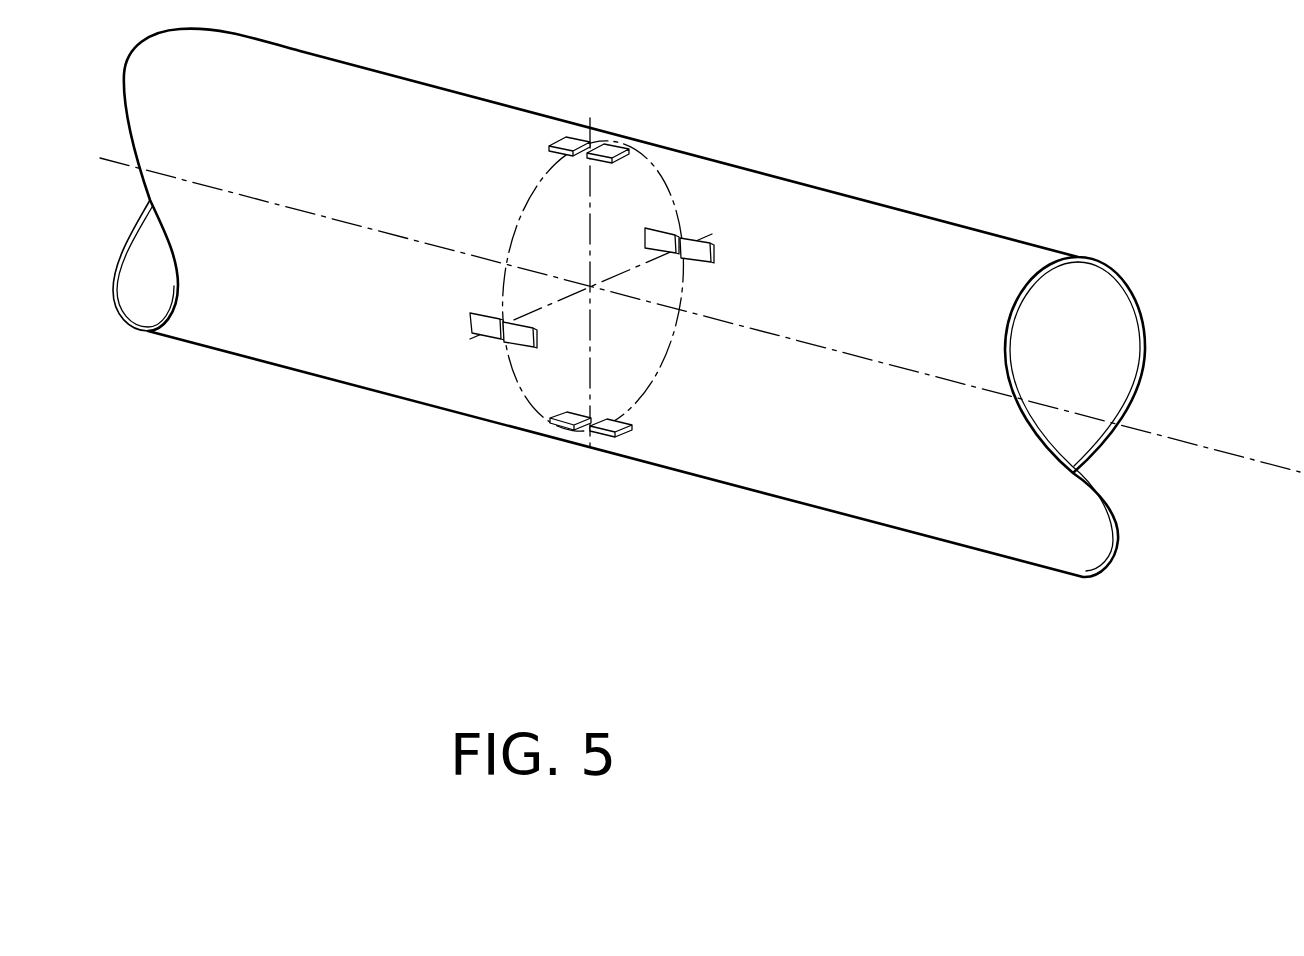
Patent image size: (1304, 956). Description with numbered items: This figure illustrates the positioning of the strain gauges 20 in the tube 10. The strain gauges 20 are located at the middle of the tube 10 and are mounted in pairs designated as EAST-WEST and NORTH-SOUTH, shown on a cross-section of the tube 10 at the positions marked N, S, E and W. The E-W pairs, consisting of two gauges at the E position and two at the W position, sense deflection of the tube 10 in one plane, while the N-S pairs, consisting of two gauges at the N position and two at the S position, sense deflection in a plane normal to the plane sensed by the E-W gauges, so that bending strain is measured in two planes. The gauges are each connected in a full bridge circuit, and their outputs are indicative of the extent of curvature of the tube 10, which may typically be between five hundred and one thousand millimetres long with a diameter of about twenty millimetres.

The tube 10 is at (986, 177).
The strain gauges 20 is at (589, 300).
The north gauge position N is at (589, 118).
The south gauge position S is at (591, 454).
The east gauge position E is at (691, 232).
The west gauge position W is at (483, 347).